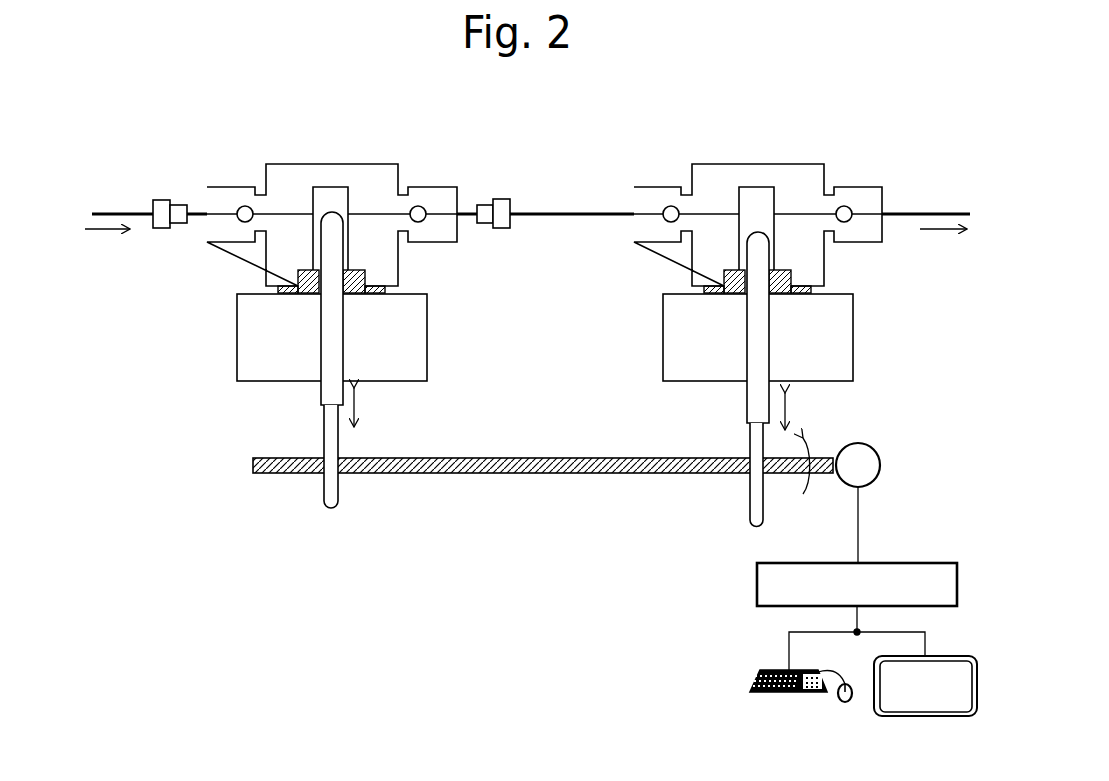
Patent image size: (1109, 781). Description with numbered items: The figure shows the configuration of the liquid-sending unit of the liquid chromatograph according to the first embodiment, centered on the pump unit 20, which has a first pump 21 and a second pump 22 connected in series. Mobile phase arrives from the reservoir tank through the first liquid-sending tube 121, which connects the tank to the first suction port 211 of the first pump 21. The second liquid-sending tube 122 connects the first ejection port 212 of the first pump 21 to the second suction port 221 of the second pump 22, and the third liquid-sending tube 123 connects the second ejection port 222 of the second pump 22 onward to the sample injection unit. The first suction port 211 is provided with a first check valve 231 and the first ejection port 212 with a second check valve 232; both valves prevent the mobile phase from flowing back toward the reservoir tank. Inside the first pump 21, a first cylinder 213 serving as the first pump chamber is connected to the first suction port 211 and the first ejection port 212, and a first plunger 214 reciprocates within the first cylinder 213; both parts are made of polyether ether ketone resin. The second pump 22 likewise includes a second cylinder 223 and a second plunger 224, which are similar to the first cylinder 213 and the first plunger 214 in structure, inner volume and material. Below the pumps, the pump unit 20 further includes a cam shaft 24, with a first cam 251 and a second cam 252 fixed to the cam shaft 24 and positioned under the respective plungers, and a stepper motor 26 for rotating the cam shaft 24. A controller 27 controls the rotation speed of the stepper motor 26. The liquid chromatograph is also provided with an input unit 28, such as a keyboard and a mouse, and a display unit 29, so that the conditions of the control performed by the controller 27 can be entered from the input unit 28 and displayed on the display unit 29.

The pump unit 20 is at (170, 550).
The first pump 21 is at (330, 260).
The second pump 22 is at (760, 261).
The cam shaft 24 is at (600, 473).
The stepper motor 26 is at (859, 455).
The controller 27 is at (903, 563).
The input unit 28 is at (762, 690).
The display unit 29 is at (908, 688).
The first liquid-sending tube 121 is at (120, 212).
The second liquid-sending tube 122 is at (553, 212).
The third liquid-sending tube 123 is at (928, 212).
The first suction port 211 is at (207, 212).
The first ejection port 212 is at (457, 212).
The first cylinder 213 is at (348, 187).
The first plunger 214 is at (331, 257).
The second suction port 221 is at (634, 211).
The second ejection port 222 is at (882, 207).
The second cylinder 223 is at (740, 187).
The second plunger 224 is at (760, 255).
The first check valve 231 is at (168, 203).
The second check valve 232 is at (495, 201).
The first cam 251 is at (332, 498).
The second cam 252 is at (758, 497).